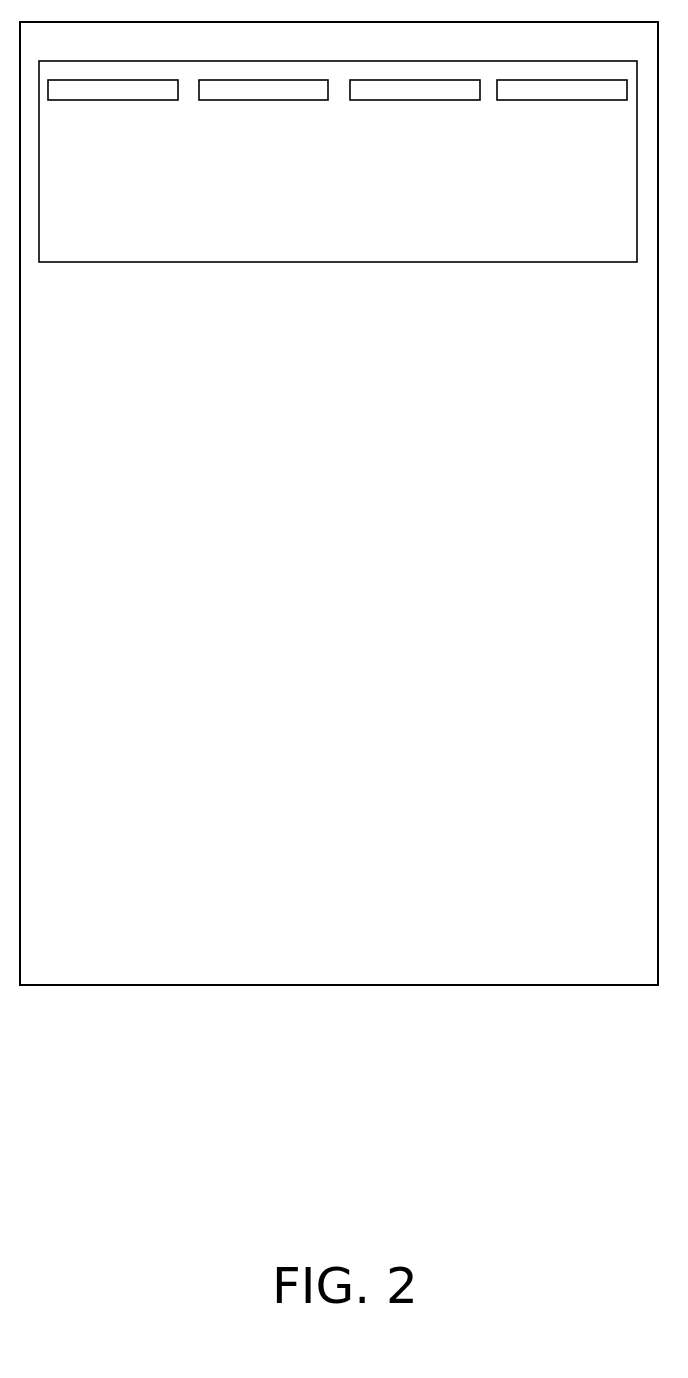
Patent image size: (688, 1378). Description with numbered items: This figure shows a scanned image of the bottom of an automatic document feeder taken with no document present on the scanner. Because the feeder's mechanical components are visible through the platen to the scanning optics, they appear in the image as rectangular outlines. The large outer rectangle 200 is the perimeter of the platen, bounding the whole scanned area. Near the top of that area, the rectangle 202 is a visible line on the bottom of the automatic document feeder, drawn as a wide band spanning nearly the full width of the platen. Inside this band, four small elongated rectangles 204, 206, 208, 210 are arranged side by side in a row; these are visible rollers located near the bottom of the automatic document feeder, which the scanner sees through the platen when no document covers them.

The perimeter of the platen 200 is at (22, 703).
The visible line on the bottom of the automatic document feeder 202 is at (174, 261).
The visible roller 204 is at (115, 101).
The visible roller 206 is at (267, 101).
The visible roller 208 is at (447, 101).
The visible roller 210 is at (562, 101).